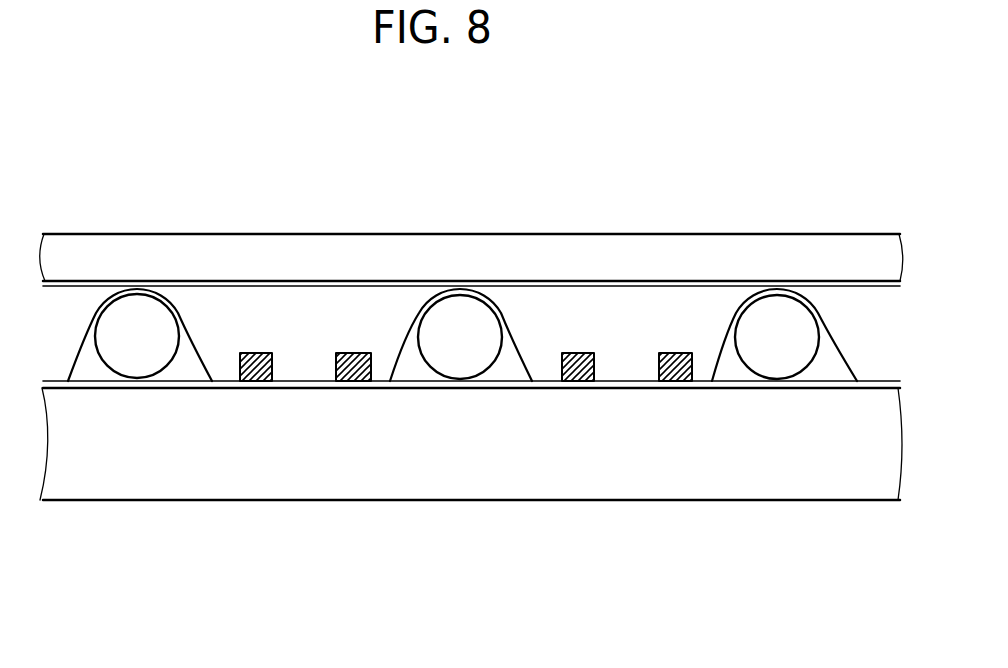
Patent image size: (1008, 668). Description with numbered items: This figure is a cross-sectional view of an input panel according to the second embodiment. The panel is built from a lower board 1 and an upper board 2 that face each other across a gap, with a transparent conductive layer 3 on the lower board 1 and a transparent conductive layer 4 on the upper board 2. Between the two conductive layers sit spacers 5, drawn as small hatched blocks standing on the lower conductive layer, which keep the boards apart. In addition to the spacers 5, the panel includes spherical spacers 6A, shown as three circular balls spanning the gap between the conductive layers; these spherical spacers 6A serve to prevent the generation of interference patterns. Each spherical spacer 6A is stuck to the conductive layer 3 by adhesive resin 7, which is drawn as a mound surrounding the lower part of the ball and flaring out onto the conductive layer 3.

The lower board 1 is at (760, 465).
The upper board 2 is at (738, 263).
The transparent conductive layer 3 is at (866, 381).
The transparent conductive layer 4 is at (849, 283).
The spacer 5 is at (258, 352).
The spherical spacer 6A is at (472, 320).
The adhesive resin 7 is at (415, 365).